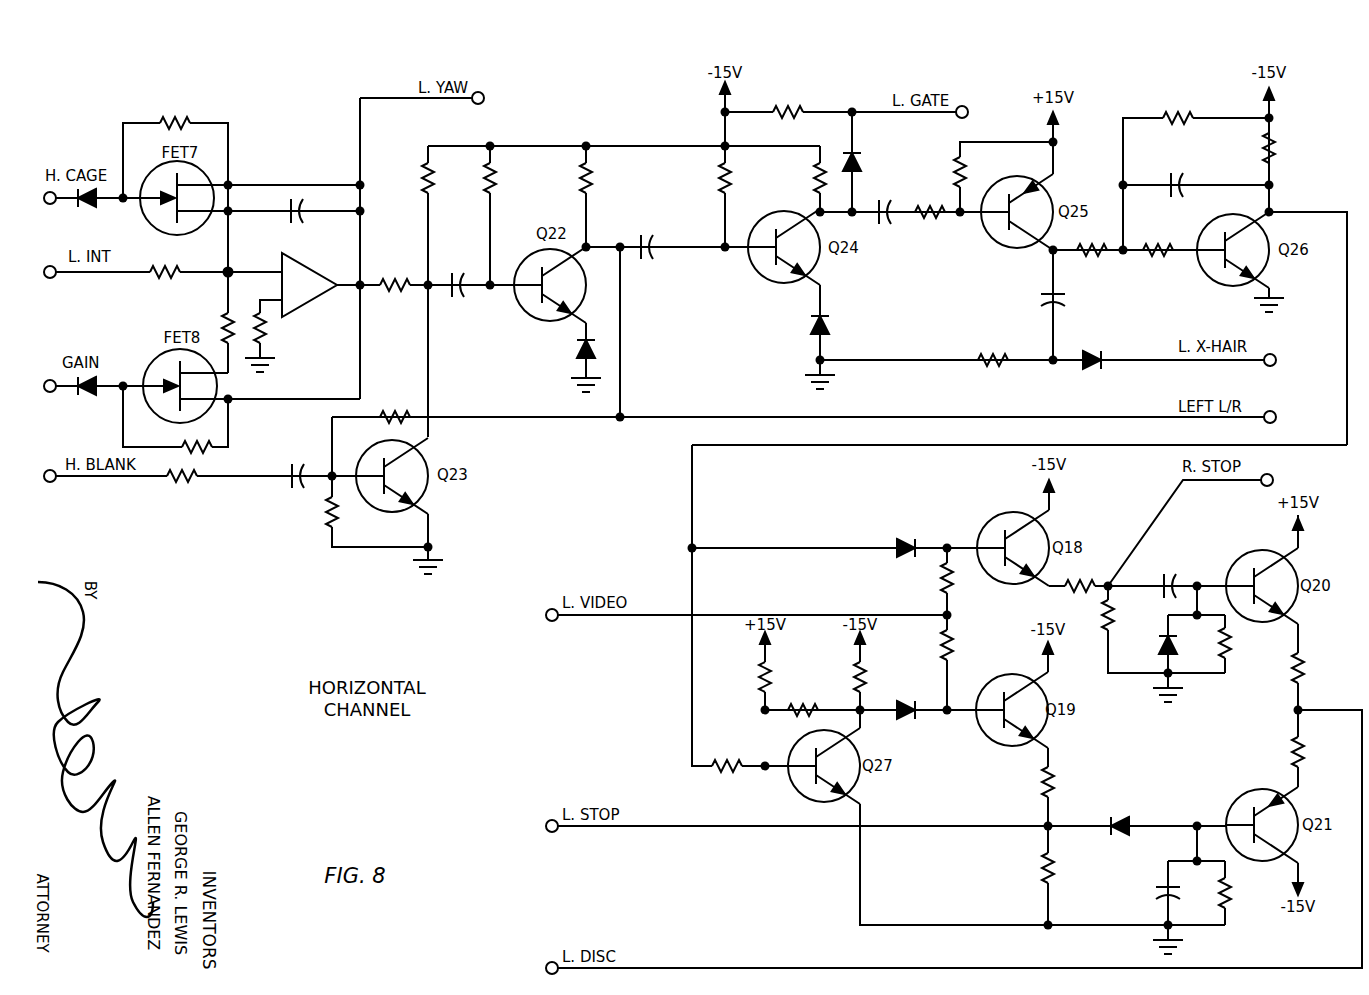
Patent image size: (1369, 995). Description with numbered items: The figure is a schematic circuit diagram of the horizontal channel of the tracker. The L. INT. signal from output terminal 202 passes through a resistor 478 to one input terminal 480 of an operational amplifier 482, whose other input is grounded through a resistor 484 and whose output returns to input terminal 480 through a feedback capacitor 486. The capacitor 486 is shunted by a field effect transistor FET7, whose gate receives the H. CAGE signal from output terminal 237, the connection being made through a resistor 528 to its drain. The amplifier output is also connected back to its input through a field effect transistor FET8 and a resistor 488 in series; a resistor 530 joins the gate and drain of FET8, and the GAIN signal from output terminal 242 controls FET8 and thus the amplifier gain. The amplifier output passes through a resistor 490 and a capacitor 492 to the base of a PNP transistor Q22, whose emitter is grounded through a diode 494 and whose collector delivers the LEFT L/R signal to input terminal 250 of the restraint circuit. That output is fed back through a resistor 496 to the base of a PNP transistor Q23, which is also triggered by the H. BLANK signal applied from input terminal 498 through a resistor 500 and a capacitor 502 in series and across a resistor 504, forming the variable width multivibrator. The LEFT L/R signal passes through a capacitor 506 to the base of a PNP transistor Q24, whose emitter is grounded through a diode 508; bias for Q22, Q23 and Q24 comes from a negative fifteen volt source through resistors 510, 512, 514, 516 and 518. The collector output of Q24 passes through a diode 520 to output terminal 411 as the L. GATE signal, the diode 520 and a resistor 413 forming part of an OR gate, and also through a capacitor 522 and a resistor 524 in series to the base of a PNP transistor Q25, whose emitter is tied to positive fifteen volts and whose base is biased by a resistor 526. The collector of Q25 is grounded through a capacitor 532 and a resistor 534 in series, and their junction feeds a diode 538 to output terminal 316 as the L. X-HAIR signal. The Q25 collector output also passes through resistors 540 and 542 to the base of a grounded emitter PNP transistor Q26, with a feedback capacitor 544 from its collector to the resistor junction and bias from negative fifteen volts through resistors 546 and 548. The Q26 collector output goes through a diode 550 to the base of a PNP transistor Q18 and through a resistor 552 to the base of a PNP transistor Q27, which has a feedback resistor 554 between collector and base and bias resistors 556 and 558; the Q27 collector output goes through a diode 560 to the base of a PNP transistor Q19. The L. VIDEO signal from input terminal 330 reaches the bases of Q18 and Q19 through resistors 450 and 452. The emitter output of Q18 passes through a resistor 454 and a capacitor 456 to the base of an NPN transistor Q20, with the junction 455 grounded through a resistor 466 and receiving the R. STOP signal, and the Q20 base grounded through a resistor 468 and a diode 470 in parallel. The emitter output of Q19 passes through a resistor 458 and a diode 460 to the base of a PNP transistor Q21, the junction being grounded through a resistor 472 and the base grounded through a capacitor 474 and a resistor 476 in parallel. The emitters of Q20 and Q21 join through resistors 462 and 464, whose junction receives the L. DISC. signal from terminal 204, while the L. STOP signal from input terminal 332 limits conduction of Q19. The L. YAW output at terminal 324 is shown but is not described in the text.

The output terminal 237 is at (54, 204).
The output terminal 202 is at (54, 278).
The output terminal 242 is at (54, 392).
The input terminal 498 is at (54, 482).
The L. yaw output terminal 324 is at (483, 94).
The output terminal 411 is at (967, 108).
The output terminal 316 is at (1275, 356).
The input terminal 250 is at (1275, 413).
The junction 455 is at (1272, 476).
The input terminal 330 is at (550, 621).
The input terminal 332 is at (550, 832).
The terminal 204 is at (549, 963).
The resistor 528 is at (168, 121).
The feedback capacitor 486 is at (290, 218).
The input terminal 480 is at (224, 270).
The resistor 478 is at (160, 276).
The resistor 488 is at (225, 323).
The operational amplifier 482 is at (322, 303).
The resistor 484 is at (268, 332).
The resistor 530 is at (205, 452).
The resistor 500 is at (183, 483).
The capacitor 502 is at (293, 487).
The resistor 504 is at (340, 518).
The resistor 490 is at (387, 280).
The capacitor 492 is at (450, 300).
The resistor 510 is at (424, 173).
The resistor 512 is at (496, 180).
The resistor 514 is at (591, 180).
The capacitor 506 is at (644, 238).
The resistor 516 is at (719, 187).
The resistor 518 is at (815, 186).
The resistor 413 is at (780, 104).
The diode 520 is at (864, 155).
The capacitor 522 is at (888, 194).
The resistor 524 is at (934, 218).
The resistor 526 is at (955, 162).
The capacitor 532 is at (1044, 292).
The resistor 540 is at (1088, 256).
The resistor 542 is at (1154, 256).
The resistor 546 is at (1172, 110).
The resistor 548 is at (1280, 156).
The capacitor 544 is at (1170, 174).
The resistor 534 is at (982, 352).
The diode 538 is at (1092, 350).
The diode 494 is at (576, 352).
The resistor 496 is at (382, 411).
The diode 508 is at (810, 323).
The diode 550 is at (903, 535).
The resistor 450 is at (942, 585).
The resistor 452 is at (940, 650).
The resistor 454 is at (1093, 577).
The capacitor 456 is at (1170, 568).
The resistor 466 is at (1100, 605).
The diode 470 is at (1160, 652).
The resistor 468 is at (1227, 650).
The resistor 462 is at (1302, 675).
The resistor 464 is at (1290, 750).
The resistor 556 is at (757, 678).
The resistor 554 is at (803, 705).
The resistor 558 is at (855, 670).
The resistor 552 is at (725, 775).
The diode 560 is at (912, 722).
The resistor 458 is at (1037, 781).
The diode 460 is at (1118, 811).
The resistor 472 is at (1037, 866).
The capacitor 474 is at (1154, 884).
The resistor 476 is at (1230, 902).
The field effect transistor FET7 is at (177, 198).
The field effect transistor FET8 is at (180, 386).
The PNP transistor Q22 is at (550, 285).
The PNP transistor Q23 is at (392, 476).
The PNP transistor Q24 is at (784, 247).
The PNP transistor Q25 is at (1017, 212).
The grounded emitter PNP transistor Q26 is at (1233, 250).
The PNP transistor Q18 is at (1013, 548).
The PNP transistor Q19 is at (1012, 710).
The NPN transistor Q20 is at (1262, 586).
The PNP transistor Q21 is at (1262, 825).
The PNP transistor Q27 is at (824, 766).